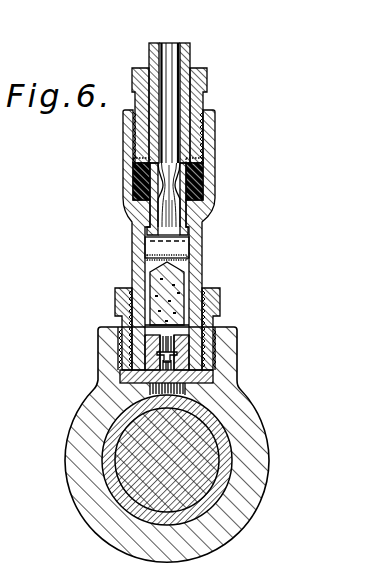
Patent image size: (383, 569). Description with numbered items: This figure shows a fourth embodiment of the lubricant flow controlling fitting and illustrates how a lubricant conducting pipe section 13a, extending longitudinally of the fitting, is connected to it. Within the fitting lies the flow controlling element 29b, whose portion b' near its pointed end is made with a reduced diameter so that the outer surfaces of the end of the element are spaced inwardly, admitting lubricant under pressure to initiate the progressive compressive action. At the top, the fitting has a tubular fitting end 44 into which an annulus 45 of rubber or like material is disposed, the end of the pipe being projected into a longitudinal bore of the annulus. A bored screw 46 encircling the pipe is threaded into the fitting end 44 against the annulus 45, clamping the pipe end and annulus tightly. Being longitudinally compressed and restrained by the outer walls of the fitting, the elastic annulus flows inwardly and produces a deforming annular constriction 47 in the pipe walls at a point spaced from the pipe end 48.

The lubricant conducting pipe section 13a is at (192, 55).
The bored screw 46 is at (208, 83).
The deforming annular constriction 47 is at (164, 162).
The tubular fitting end 44 is at (201, 163).
The annulus 45 is at (198, 185).
The end of the pipe 48 is at (181, 212).
The reduced diameter portion b' is at (197, 281).
The flow controlling element 29b is at (165, 309).